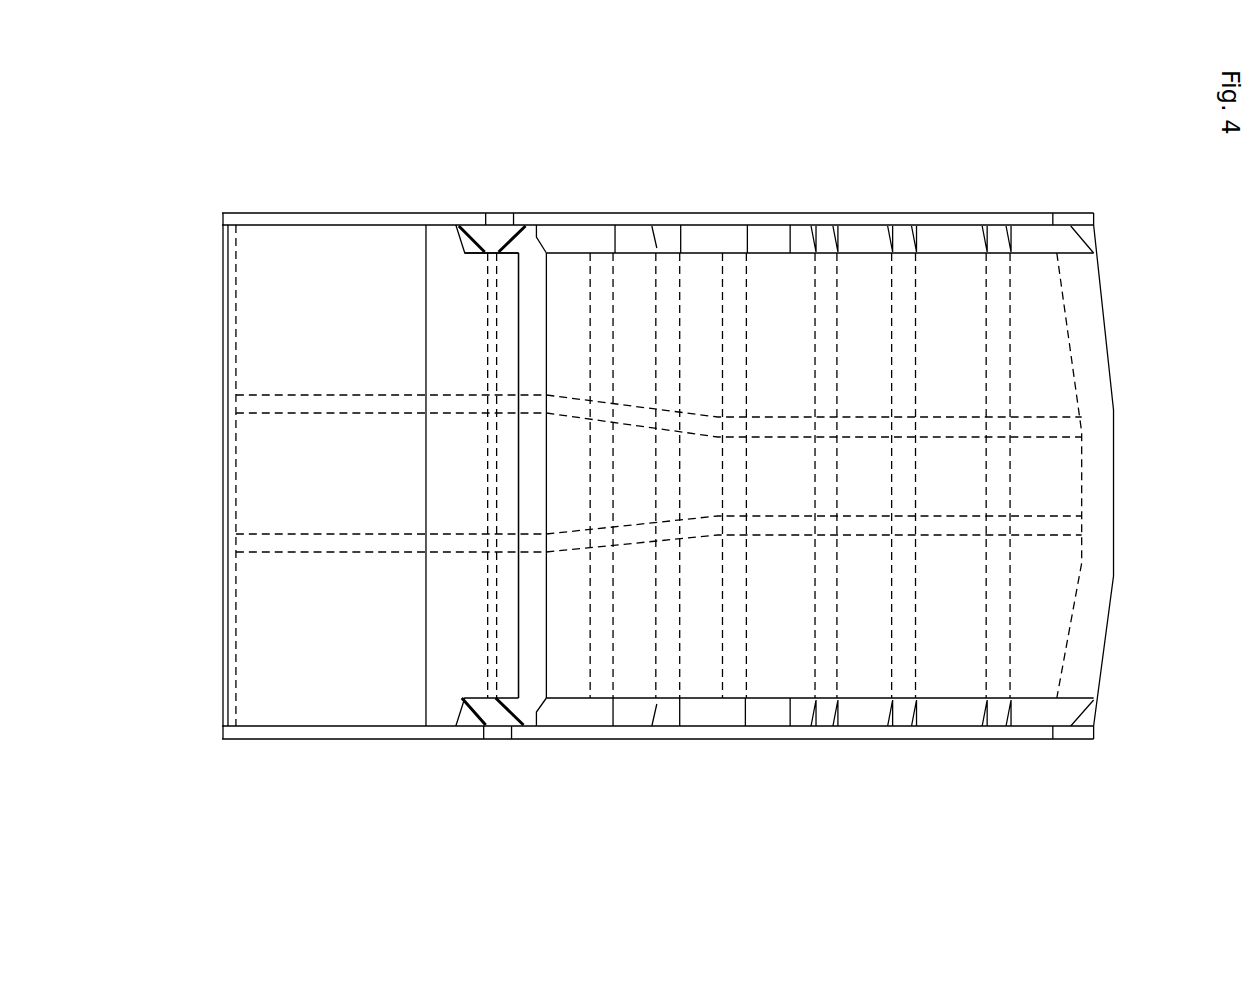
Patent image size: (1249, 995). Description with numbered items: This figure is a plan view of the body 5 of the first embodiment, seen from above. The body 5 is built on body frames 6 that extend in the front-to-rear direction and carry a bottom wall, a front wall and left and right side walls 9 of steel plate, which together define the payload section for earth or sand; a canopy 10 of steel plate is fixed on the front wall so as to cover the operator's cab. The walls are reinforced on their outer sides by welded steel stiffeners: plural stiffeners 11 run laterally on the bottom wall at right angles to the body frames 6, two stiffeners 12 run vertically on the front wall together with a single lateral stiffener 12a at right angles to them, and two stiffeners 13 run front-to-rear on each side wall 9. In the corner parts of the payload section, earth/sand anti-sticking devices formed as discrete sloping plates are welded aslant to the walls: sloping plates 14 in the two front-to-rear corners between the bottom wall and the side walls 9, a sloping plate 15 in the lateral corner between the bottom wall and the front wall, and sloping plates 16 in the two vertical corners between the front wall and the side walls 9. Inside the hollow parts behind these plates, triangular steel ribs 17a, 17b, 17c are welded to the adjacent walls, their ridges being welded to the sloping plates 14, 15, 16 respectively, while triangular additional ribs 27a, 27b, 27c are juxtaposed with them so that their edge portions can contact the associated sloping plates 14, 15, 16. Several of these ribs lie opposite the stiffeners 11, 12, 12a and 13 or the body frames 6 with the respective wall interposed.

The body 5 is at (1049, 206).
The body frames 6 is at (900, 430).
The left and right side walls 9 is at (667, 727).
The canopy 10 is at (355, 250).
The stiffeners 11 is at (908, 572).
The stiffeners 12 is at (503, 542).
The stiffener 12a is at (495, 470).
The stiffeners 13 is at (780, 740).
The sloping plates 14 is at (967, 717).
The sloping plate 15 is at (524, 567).
The sloping plates 16 is at (511, 717).
The ribs 17a is at (920, 727).
The ribs 17b is at (527, 545).
The ribs 17c is at (502, 717).
The additional ribs 27a is at (892, 713).
The additional ribs 27b is at (535, 540).
The additional ribs 27c is at (487, 726).